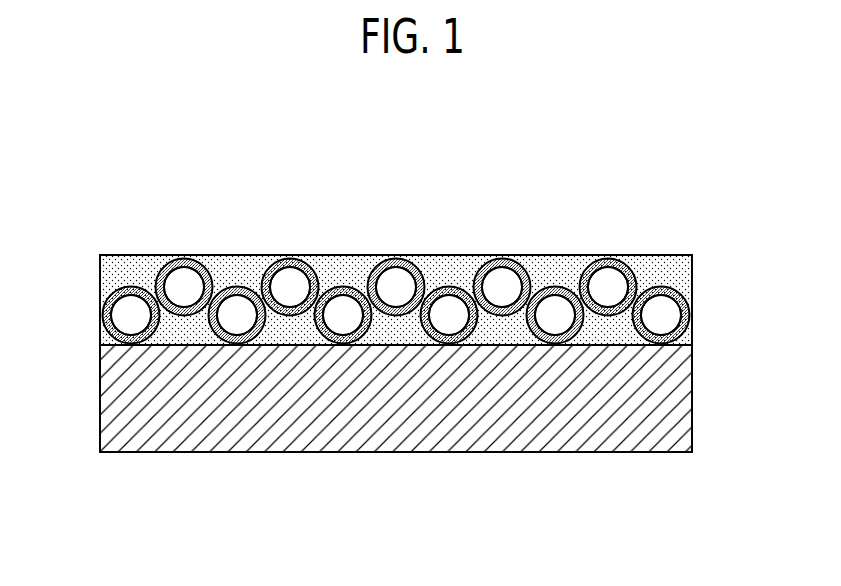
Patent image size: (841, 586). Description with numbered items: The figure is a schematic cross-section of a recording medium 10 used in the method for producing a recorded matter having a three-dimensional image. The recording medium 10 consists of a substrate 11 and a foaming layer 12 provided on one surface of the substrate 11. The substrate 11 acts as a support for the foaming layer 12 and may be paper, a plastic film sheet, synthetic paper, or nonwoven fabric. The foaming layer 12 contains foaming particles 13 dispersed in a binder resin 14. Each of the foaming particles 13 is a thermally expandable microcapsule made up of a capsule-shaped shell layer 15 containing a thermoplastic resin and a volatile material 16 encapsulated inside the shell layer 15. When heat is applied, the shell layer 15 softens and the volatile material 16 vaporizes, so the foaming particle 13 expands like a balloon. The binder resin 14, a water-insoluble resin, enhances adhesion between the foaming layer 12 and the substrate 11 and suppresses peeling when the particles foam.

The recording medium 10 is at (638, 202).
The substrate 11 is at (313, 442).
The foaming layer 12 is at (353, 252).
The foaming particles 13 is at (432, 270).
The binder resin 14 is at (232, 267).
The shell layer 15 is at (369, 267).
The volatile material 16 is at (403, 260).